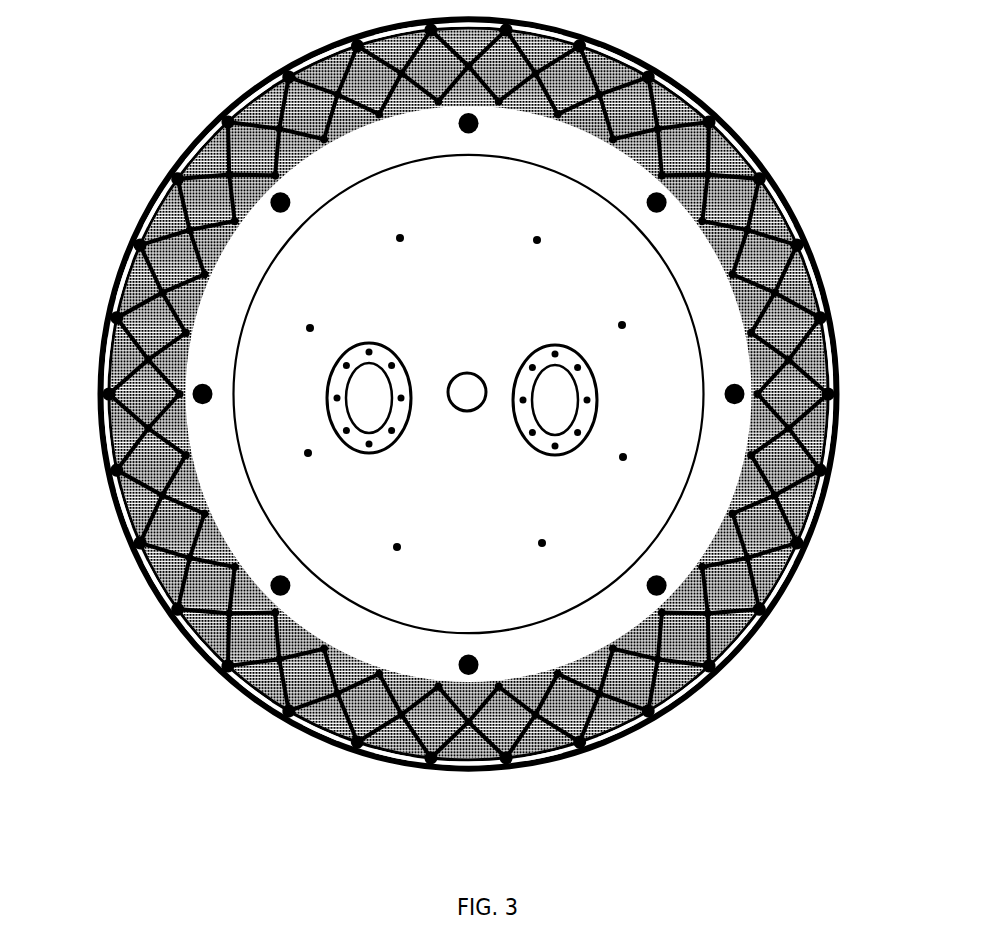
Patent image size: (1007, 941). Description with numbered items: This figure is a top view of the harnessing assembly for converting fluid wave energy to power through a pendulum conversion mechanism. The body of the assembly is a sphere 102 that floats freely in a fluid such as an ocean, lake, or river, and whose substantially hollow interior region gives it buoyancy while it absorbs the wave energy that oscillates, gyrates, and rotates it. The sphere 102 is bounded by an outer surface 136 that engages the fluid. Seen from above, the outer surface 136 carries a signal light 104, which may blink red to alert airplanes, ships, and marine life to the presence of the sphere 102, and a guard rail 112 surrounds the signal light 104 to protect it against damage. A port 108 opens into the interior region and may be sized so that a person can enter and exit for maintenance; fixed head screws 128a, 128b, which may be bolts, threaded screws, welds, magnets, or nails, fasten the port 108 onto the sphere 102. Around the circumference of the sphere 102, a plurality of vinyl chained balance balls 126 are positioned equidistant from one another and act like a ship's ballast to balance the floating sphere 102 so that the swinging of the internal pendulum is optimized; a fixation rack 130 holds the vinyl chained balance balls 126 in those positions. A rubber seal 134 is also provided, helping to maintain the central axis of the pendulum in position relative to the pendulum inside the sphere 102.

The sphere 102 is at (643, 257).
The signal light 104 is at (475, 375).
The port 108 is at (327, 422).
The guard rail 112 is at (622, 325).
The vinyl chained balance balls 126 is at (695, 90).
The fixed head screw 128a is at (200, 122).
The fixed head screw 128b is at (100, 347).
The fixation rack 130 is at (735, 125).
The rubber seal 134 is at (117, 275).
The outer surface 136 is at (238, 265).